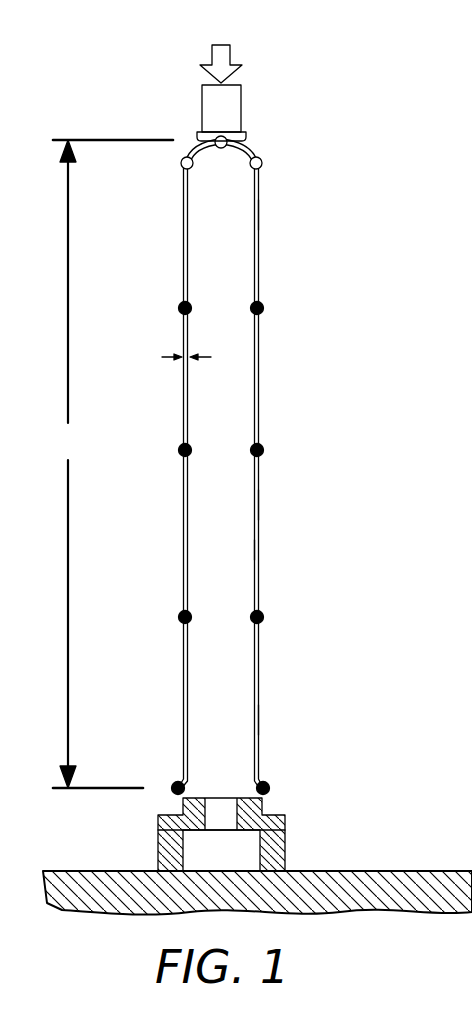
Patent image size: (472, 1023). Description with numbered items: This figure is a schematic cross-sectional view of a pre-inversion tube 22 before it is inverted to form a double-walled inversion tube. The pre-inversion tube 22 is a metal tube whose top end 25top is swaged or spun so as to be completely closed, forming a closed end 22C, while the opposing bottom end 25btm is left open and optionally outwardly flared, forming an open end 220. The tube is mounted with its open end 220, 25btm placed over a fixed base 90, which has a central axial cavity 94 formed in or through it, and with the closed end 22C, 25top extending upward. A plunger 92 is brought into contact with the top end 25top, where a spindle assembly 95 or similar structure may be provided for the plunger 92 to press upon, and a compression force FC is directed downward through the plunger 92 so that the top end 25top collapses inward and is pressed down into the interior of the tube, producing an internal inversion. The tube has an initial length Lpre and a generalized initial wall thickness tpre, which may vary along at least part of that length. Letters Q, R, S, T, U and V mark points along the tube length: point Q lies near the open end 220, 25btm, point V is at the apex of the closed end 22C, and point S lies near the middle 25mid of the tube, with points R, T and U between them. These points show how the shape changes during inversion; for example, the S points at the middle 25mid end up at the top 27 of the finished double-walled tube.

The pre-inversion tube 22 is at (363, 173).
The top 27 is at (364, 549).
The closed end 22C is at (218, 165).
The point V is at (236, 134).
The point U is at (262, 163).
The point T is at (178, 307).
The point S is at (179, 452).
The point R is at (178, 616).
The point Q is at (172, 786).
The open end 220 is at (212, 727).
The top end 25top is at (272, 217).
The middle 25mid is at (270, 500).
The bottom end 25btm is at (272, 718).
The plunger 92 is at (225, 103).
The compression force FC is at (212, 58).
The spindle assembly 95 is at (181, 132).
The initial length Lpre is at (96, 464).
The initial wall thickness tpre is at (167, 354).
The fixed base 90 is at (158, 850).
The central axial cavity 94 is at (232, 855).